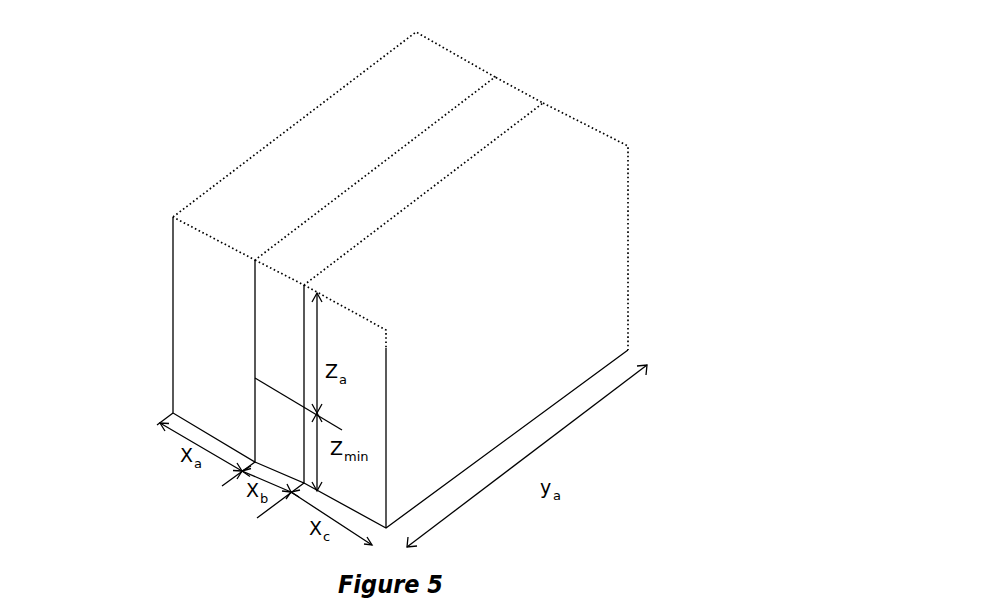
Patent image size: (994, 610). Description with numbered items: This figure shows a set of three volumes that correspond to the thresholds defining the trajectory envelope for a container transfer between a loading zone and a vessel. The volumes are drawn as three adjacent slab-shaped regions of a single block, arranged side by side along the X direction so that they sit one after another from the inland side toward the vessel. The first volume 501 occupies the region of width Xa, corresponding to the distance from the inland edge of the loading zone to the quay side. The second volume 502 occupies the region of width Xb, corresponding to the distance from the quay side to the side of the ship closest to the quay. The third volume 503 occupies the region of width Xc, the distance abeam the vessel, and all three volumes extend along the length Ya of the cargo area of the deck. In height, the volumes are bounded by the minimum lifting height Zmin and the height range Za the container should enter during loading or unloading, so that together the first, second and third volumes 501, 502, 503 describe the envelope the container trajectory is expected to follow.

The first volume 501 is at (158, 320).
The second volume 502 is at (540, 82).
The third volume 503 is at (612, 122).